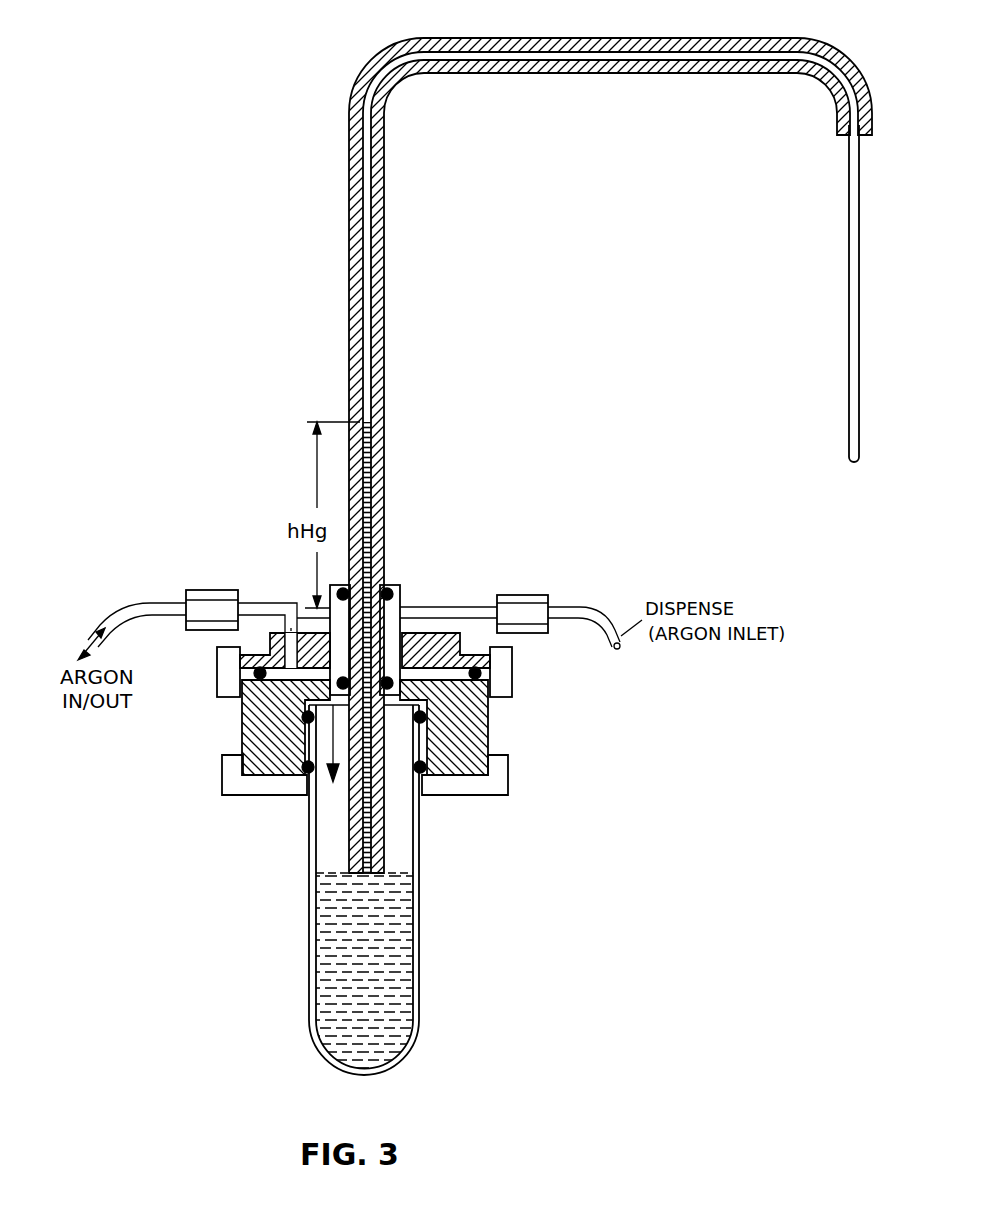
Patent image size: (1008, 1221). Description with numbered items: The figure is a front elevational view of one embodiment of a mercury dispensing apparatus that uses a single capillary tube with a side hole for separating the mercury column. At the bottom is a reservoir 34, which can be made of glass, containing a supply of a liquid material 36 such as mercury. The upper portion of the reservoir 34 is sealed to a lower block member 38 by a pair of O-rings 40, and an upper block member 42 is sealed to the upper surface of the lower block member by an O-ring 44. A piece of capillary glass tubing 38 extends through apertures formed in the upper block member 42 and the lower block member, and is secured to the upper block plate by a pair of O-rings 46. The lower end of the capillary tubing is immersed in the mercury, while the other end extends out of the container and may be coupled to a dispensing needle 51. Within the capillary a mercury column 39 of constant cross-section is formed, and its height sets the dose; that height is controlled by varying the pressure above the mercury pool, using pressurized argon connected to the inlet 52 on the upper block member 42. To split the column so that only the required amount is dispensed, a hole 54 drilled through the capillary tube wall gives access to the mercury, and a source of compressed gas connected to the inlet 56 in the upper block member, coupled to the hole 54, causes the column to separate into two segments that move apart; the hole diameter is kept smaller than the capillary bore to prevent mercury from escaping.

The reservoir 34 is at (308, 865).
The liquid material 36 is at (403, 933).
The capillary glass tubing 38 is at (386, 268).
The mercury column 39 is at (368, 506).
The O-rings 40 is at (306, 719).
The upper block member 42 is at (462, 637).
The O-ring 44 is at (245, 698).
The O-rings 46 is at (340, 590).
The dispensing needle 51 is at (861, 270).
The inlet 52 is at (206, 590).
The hole 54 is at (403, 594).
The inlet 56 is at (535, 597).